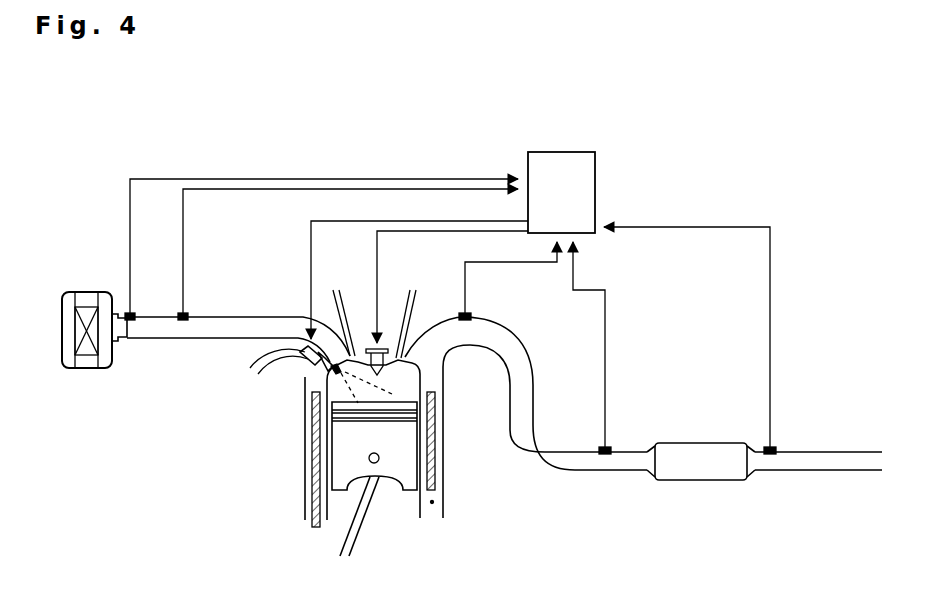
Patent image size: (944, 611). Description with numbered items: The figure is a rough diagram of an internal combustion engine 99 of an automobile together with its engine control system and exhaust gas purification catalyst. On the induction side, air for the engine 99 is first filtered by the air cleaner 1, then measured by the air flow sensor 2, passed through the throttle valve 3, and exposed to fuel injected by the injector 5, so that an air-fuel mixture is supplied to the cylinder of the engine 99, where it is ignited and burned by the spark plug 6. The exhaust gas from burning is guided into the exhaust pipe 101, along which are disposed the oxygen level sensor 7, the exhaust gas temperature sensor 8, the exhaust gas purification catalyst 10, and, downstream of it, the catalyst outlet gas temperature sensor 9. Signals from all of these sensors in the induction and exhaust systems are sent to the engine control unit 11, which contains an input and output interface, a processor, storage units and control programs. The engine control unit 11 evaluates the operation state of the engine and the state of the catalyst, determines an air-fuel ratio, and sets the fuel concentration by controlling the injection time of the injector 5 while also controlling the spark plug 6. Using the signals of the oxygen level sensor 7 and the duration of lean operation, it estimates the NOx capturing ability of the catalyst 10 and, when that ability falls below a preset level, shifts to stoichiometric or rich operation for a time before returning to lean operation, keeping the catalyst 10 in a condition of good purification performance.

The air cleaner 1 is at (66, 370).
The air flow sensor 2 is at (133, 311).
The throttle valve 3 is at (186, 340).
The injector 5 is at (302, 380).
The spark plug 6 is at (366, 358).
The oxygen level sensor 7 is at (458, 313).
The exhaust gas temperature sensor 8 is at (612, 450).
The catalyst outlet gas temperature sensor 9 is at (784, 448).
The exhaust gas purification catalyst 10 is at (700, 481).
The engine control unit 11 is at (586, 153).
The engine 99 is at (372, 505).
The exhaust pipe 101 is at (560, 466).